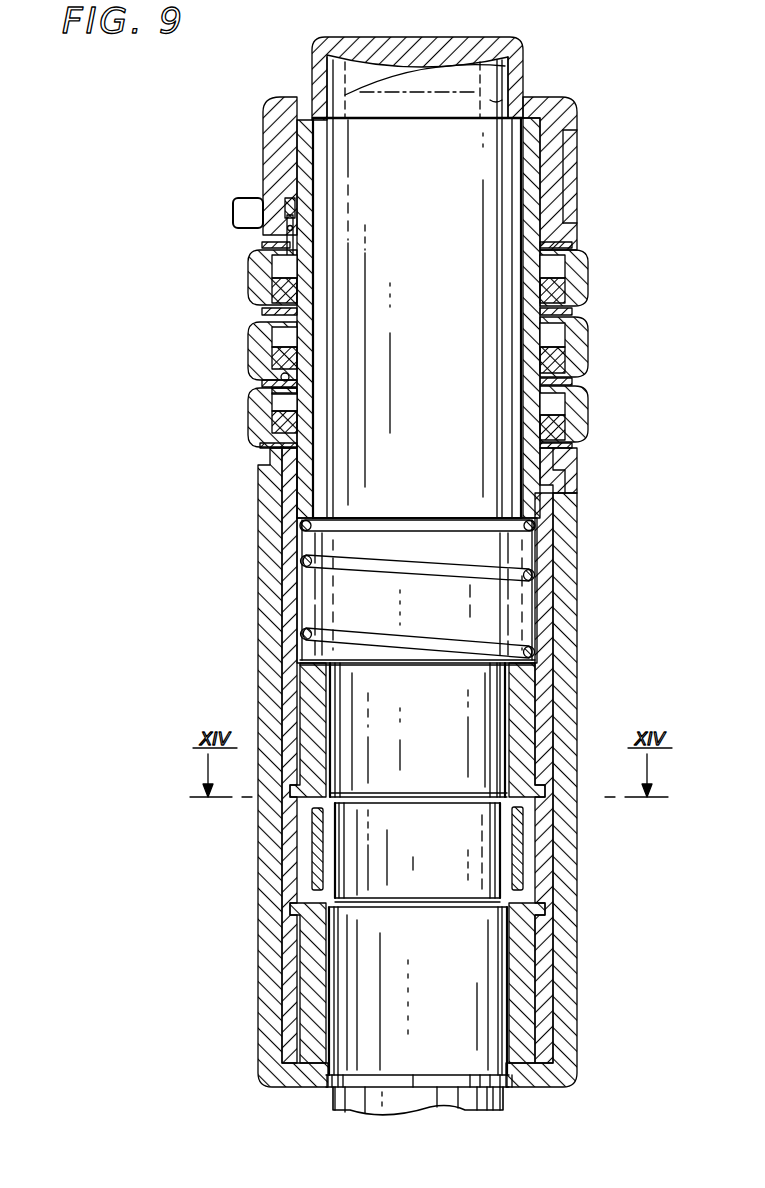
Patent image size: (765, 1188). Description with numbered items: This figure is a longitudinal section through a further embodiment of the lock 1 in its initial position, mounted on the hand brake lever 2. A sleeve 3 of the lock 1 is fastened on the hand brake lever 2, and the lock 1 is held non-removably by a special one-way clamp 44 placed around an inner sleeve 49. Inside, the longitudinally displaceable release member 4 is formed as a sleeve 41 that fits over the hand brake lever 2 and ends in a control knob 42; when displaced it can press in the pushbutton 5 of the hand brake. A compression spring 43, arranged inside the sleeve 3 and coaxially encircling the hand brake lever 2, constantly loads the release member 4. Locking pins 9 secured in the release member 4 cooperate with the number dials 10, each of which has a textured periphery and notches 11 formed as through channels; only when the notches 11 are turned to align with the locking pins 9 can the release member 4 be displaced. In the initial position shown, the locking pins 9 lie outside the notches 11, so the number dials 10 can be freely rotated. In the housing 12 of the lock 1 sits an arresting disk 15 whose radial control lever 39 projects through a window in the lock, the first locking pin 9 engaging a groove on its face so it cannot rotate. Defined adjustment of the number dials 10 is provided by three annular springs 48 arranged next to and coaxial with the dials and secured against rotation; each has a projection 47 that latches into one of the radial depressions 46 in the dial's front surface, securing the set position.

The lock 1 is at (585, 72).
The hand brake lever 2 is at (325, 178).
The sleeve 3 is at (533, 684).
The release member 4 is at (306, 76).
The pushbutton 5 is at (490, 102).
The locking pins 9 is at (287, 230).
The number dials 10 is at (588, 288).
The notches 11 is at (278, 352).
The housing 12 is at (553, 478).
The arresting disk 15 is at (267, 199).
The radial control lever 39 is at (233, 213).
The sleeve 41 is at (304, 498).
The control knob 42 is at (512, 78).
The compression spring 43 is at (537, 569).
The one-way clamp 44 is at (518, 841).
The radial depressions 46 is at (281, 376).
The projection 47 is at (284, 400).
The annular springs 48 is at (258, 248).
The inner sleeve 49 is at (517, 1018).